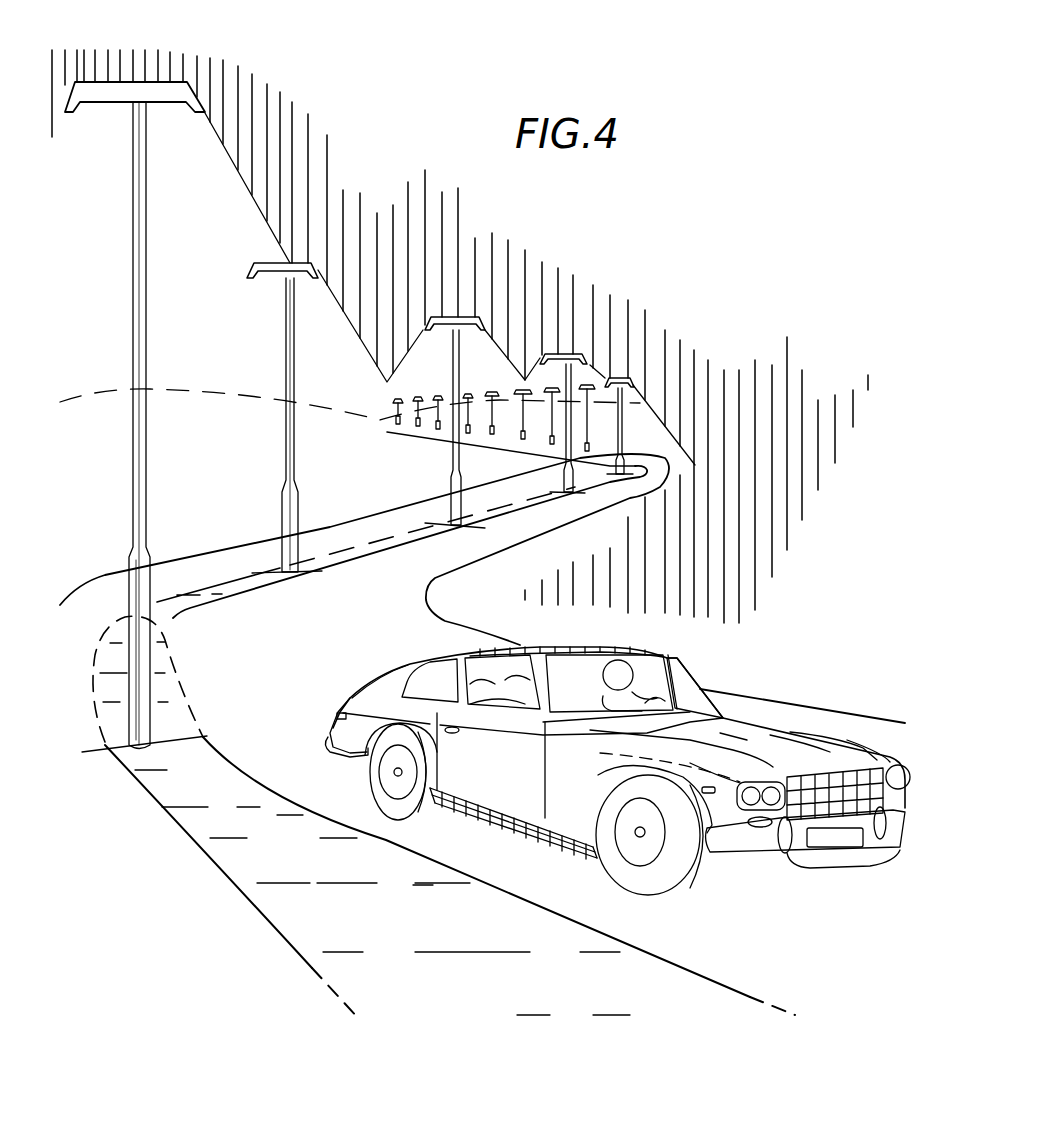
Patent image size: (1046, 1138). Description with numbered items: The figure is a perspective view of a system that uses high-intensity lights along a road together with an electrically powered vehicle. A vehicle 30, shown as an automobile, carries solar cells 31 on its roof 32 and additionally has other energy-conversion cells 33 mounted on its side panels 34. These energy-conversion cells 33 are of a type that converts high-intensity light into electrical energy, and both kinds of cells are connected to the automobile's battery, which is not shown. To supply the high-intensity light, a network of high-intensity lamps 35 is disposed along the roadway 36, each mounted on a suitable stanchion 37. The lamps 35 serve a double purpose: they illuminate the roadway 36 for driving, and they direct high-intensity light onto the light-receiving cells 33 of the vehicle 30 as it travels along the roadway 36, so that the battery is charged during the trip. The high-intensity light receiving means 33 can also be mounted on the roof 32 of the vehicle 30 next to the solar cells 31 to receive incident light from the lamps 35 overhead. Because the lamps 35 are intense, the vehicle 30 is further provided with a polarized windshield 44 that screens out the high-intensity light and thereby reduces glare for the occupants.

The vehicle 30 is at (617, 753).
The solar cells 31 is at (563, 648).
The roof 32 is at (427, 662).
The energy-conversion cells 33 is at (512, 813).
The side panels 34 is at (467, 813).
The high-intensity lamps 35 is at (163, 98).
The roadway 36 is at (463, 578).
The stanchions 37 is at (140, 482).
The polarized windshield 44 is at (675, 673).